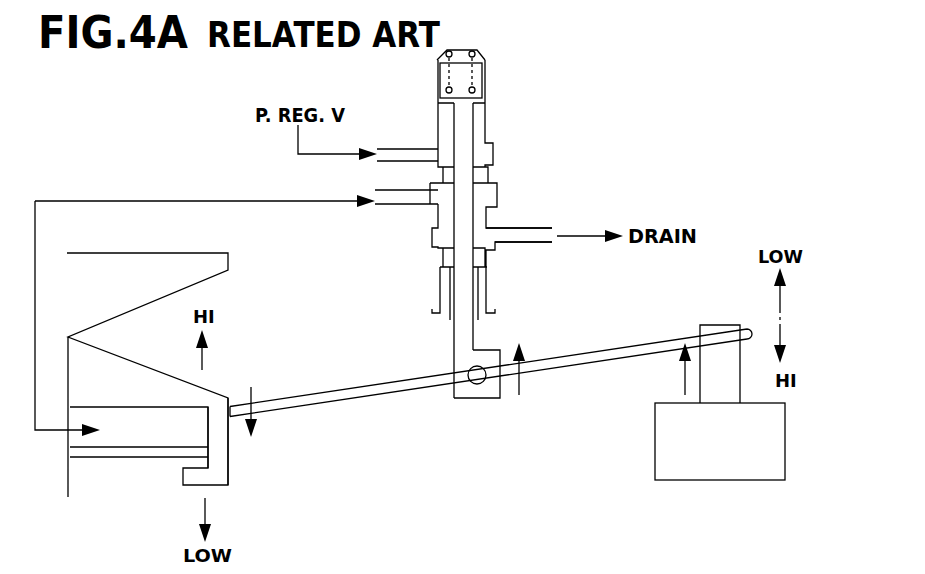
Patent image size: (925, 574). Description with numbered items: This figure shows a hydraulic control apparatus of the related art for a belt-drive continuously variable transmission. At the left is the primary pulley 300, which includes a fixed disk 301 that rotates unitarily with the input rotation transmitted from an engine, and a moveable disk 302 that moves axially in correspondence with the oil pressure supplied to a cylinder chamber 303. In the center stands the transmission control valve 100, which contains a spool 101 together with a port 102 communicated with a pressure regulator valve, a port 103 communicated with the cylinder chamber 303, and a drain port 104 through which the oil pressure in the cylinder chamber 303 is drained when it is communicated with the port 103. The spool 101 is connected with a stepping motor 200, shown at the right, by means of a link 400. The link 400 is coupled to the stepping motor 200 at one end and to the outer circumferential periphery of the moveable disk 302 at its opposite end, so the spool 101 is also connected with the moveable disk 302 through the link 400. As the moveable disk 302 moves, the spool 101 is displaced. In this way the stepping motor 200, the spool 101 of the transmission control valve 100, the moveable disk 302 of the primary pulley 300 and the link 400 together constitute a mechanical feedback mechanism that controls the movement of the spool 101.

The transmission control valve 100 is at (487, 100).
The spool 101 is at (463, 130).
The port 102 is at (427, 145).
The port 103 is at (432, 204).
The drain port 104 is at (492, 227).
The stepping motor 200 is at (655, 427).
The primary pulley 300 is at (193, 369).
The fixed disk 301 is at (183, 252).
The moveable disk 302 is at (225, 453).
The cylinder chamber 303 is at (138, 422).
The link 400 is at (545, 358).